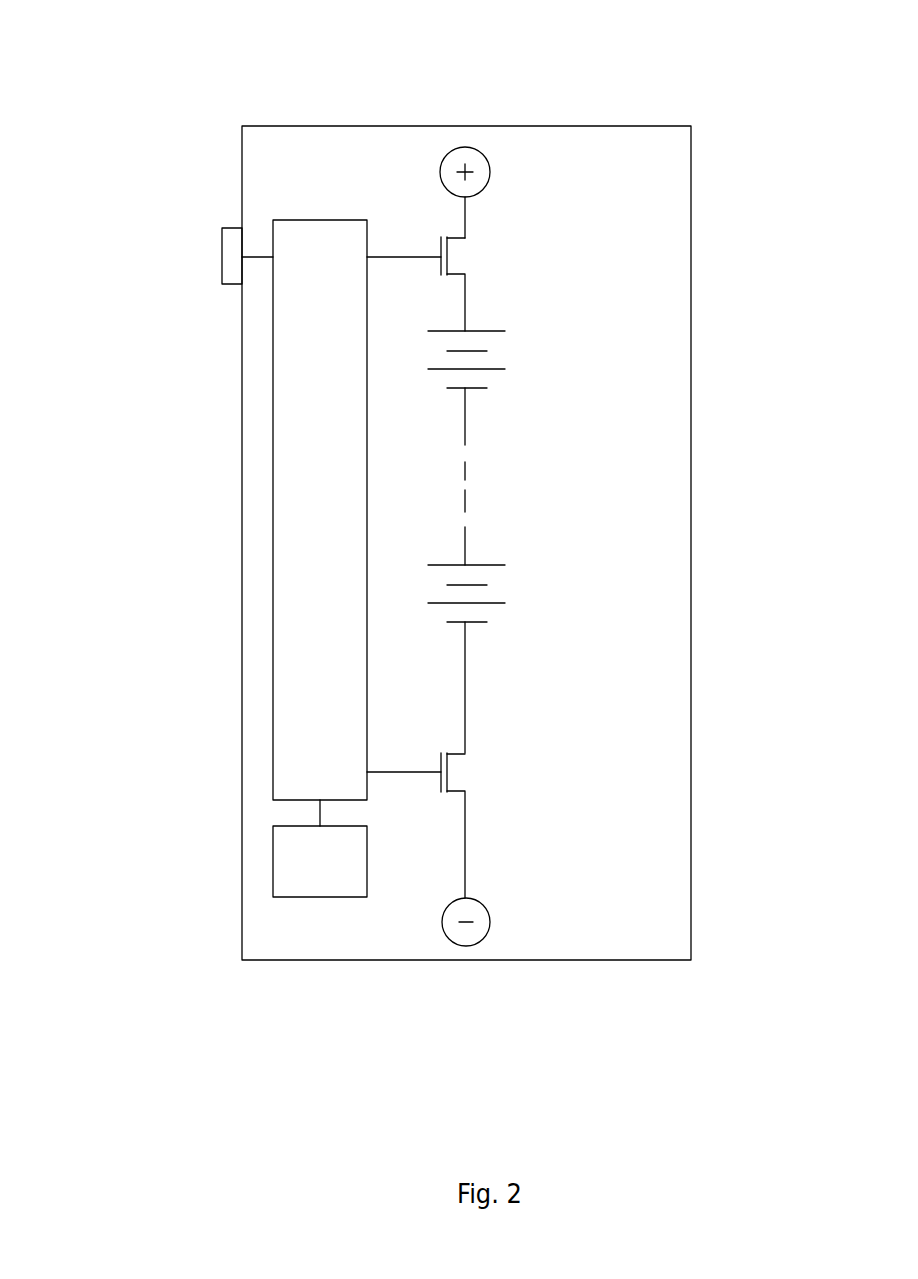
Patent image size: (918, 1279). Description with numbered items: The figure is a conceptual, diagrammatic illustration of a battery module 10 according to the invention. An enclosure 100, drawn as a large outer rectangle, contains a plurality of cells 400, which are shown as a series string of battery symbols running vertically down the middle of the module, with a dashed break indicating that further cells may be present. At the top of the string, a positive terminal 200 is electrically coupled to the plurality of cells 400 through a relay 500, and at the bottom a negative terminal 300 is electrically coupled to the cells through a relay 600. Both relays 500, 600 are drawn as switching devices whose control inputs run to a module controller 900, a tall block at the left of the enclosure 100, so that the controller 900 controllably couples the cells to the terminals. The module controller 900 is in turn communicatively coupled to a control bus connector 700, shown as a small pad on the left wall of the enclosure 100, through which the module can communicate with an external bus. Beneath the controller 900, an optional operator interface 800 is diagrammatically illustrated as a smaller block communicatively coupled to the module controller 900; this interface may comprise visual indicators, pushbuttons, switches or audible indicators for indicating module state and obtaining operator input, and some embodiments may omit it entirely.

The battery module 10 is at (635, 126).
The enclosure 100 is at (616, 773).
The positive terminal 200 is at (458, 147).
The negative terminal 300 is at (470, 945).
The cells 400 is at (505, 341).
The relay 500 is at (442, 220).
The relay 600 is at (443, 800).
The control bus connector 700 is at (222, 258).
The operator interface 800 is at (273, 862).
The module controller 900 is at (311, 669).